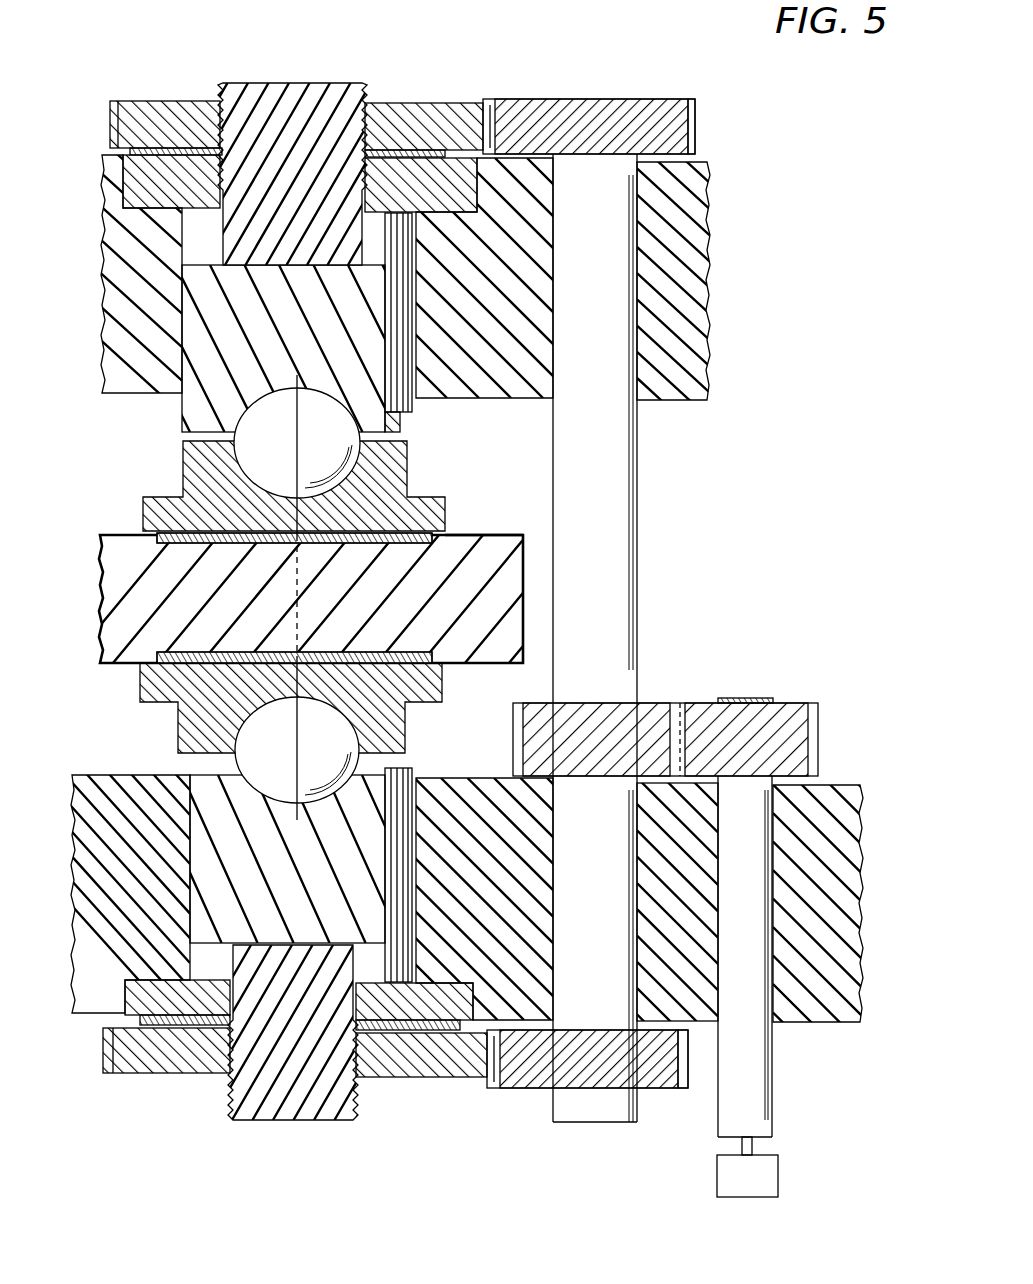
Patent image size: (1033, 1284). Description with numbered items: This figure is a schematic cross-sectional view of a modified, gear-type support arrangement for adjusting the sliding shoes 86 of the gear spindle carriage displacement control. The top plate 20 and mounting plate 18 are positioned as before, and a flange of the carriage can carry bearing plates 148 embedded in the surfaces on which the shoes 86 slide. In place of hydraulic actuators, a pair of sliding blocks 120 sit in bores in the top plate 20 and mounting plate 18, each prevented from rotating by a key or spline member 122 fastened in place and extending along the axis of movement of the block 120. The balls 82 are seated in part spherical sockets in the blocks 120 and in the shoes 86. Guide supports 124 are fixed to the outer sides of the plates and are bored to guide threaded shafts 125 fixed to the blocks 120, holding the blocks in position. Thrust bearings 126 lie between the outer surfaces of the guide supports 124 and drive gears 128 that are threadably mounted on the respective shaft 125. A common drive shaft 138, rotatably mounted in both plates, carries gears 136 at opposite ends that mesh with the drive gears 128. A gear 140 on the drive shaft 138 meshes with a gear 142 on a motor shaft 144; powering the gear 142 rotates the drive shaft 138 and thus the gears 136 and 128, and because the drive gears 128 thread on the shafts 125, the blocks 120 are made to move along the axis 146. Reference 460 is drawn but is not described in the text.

The mounting plate 18 is at (835, 787).
The top plate 20 is at (697, 287).
The ball 82 is at (253, 455).
The sliding shoe 86 is at (152, 505).
The sliding block 120 is at (193, 412).
The key or spline member 122 is at (408, 413).
The guide support 124 is at (137, 185).
The threaded shaft 125 is at (312, 1120).
The thrust bearing 126 is at (128, 148).
The drive gear 128 is at (465, 100).
The gear 136 is at (690, 133).
The drive shaft 138 is at (628, 443).
The gear 140 is at (655, 705).
The gear 142 is at (797, 703).
The motor shaft 144 is at (772, 1078).
The axis 146 is at (293, 615).
The bearing plate 148 is at (167, 642).
The bracket 460 is at (478, 535).